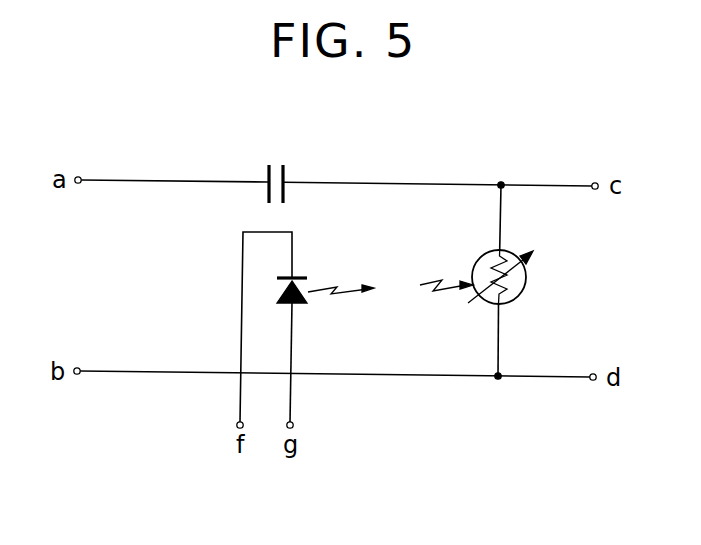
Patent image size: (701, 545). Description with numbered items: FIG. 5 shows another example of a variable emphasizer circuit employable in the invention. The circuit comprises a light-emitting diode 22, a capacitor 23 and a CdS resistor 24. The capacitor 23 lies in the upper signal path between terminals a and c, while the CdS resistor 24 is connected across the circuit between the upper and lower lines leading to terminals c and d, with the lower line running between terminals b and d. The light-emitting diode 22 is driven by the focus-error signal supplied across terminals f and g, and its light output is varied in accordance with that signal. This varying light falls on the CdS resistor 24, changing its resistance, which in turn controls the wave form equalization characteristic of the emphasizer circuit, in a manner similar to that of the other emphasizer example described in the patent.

The light-emitting diode 22 is at (297, 303).
The capacitor 23 is at (279, 164).
The CdS resistor 24 is at (526, 273).